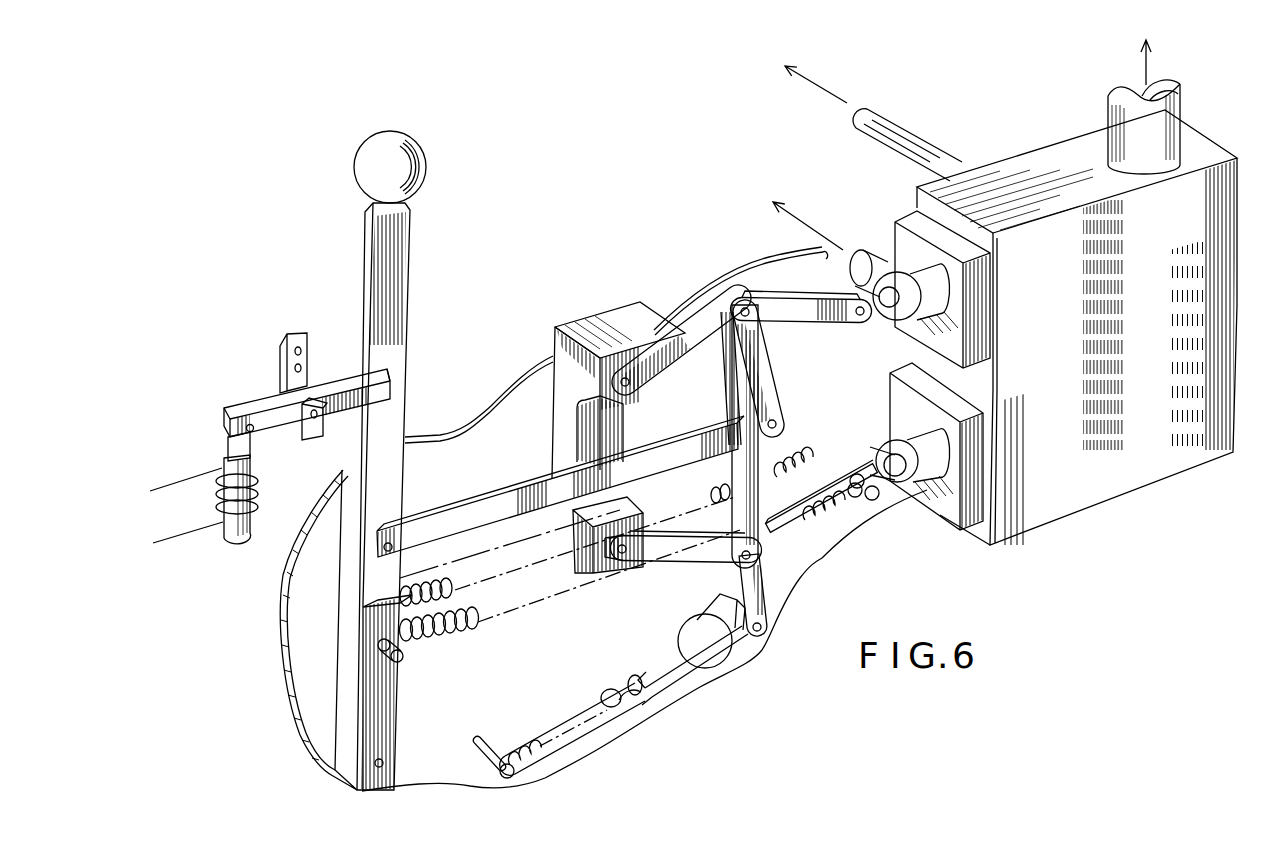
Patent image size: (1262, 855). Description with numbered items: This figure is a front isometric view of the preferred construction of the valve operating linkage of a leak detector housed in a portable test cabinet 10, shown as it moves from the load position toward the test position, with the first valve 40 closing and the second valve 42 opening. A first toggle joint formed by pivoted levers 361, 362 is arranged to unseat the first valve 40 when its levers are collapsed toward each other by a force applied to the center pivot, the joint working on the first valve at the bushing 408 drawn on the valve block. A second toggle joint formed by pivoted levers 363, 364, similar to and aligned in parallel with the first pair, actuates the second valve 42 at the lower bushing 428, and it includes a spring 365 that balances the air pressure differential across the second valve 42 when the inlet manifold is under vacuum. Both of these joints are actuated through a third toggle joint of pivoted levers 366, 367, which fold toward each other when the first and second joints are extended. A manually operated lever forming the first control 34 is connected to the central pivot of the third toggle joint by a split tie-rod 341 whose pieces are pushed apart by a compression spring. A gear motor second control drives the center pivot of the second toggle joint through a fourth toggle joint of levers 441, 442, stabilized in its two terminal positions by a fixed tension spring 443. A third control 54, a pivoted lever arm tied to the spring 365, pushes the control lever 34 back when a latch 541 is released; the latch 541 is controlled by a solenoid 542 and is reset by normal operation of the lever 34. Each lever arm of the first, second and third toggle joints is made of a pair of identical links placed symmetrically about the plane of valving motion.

The portable test cabinet 10 is at (530, 390).
The first control 34 is at (382, 272).
The first valve 40 is at (1060, 275).
The second valve 42 is at (1062, 460).
The third control 54 is at (343, 527).
The split tie-rod 341 is at (494, 490).
The pivoted lever 361 is at (703, 298).
The pivoted lever 362 is at (758, 295).
The pivoted lever 363 is at (662, 533).
The pivoted lever 364 is at (800, 516).
The spring 365 is at (470, 618).
The pivoted lever 366 is at (765, 372).
The pivoted lever 367 is at (775, 457).
The bushing 408 is at (895, 233).
The bushing 428 is at (948, 512).
The lever 441 is at (710, 601).
The lever 442 is at (762, 578).
The fixed tension spring 443 is at (614, 700).
The latch 541 is at (257, 402).
The solenoid 542 is at (220, 467).